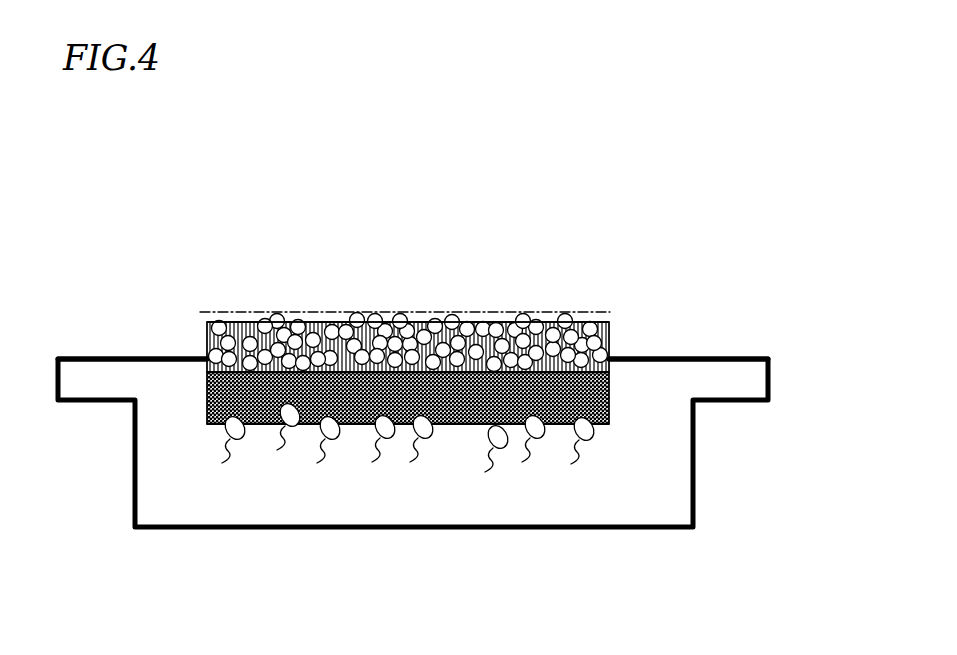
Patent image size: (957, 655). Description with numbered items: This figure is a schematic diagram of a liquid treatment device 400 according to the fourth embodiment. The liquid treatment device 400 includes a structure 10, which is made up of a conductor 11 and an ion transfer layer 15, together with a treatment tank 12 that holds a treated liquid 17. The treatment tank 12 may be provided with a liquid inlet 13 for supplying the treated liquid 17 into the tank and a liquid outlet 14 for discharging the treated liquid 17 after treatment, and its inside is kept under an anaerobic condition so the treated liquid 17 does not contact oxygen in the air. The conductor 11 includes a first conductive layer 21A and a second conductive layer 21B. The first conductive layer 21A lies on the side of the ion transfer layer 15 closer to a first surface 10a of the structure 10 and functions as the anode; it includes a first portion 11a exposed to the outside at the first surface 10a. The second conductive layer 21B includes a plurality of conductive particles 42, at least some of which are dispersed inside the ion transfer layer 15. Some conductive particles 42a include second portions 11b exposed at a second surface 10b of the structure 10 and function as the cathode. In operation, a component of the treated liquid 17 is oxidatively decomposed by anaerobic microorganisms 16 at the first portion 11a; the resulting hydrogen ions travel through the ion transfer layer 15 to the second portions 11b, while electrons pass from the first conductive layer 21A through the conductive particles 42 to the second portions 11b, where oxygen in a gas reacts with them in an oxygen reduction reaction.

The liquid treatment device 400 is at (783, 97).
The structure 10 is at (193, 305).
The first surface 10a is at (256, 425).
The second surface 10b is at (236, 316).
The conductor 11 is at (738, 97).
The first portion 11a is at (467, 425).
The second portions 11b is at (375, 318).
The treatment tank 12 is at (577, 528).
The liquid inlet 13 is at (72, 358).
The liquid outlet 14 is at (760, 358).
The ion transfer layer 15 is at (310, 316).
The anaerobic microorganisms 16 is at (332, 438).
The treated liquid 17 is at (650, 510).
The first conductive layer 21A is at (609, 372).
The second conductive layer 21B is at (628, 178).
The conductive particles 42 is at (525, 318).
The conductive particles including second portions 42a is at (462, 243).